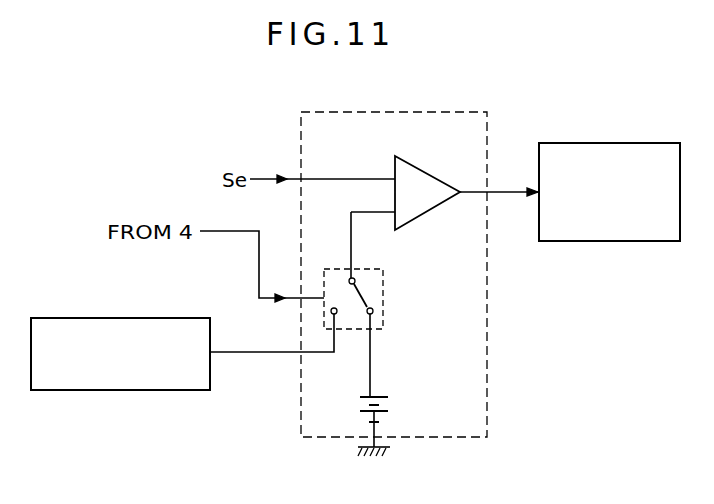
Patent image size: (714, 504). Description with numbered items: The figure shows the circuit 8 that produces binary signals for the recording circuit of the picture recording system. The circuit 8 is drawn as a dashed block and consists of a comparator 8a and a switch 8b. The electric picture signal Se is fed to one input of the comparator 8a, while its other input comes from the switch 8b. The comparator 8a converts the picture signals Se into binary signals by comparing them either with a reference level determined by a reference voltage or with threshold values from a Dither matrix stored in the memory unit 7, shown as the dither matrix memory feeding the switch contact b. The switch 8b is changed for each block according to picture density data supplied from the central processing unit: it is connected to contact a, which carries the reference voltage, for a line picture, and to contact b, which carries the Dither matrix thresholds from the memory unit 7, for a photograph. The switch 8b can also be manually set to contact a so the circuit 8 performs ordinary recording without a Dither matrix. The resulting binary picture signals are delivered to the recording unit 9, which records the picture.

The memory unit 7 is at (70, 318).
The circuit 8 is at (489, 373).
The comparator 8a is at (436, 175).
The switch 8b is at (385, 294).
The recording unit 9 is at (634, 143).